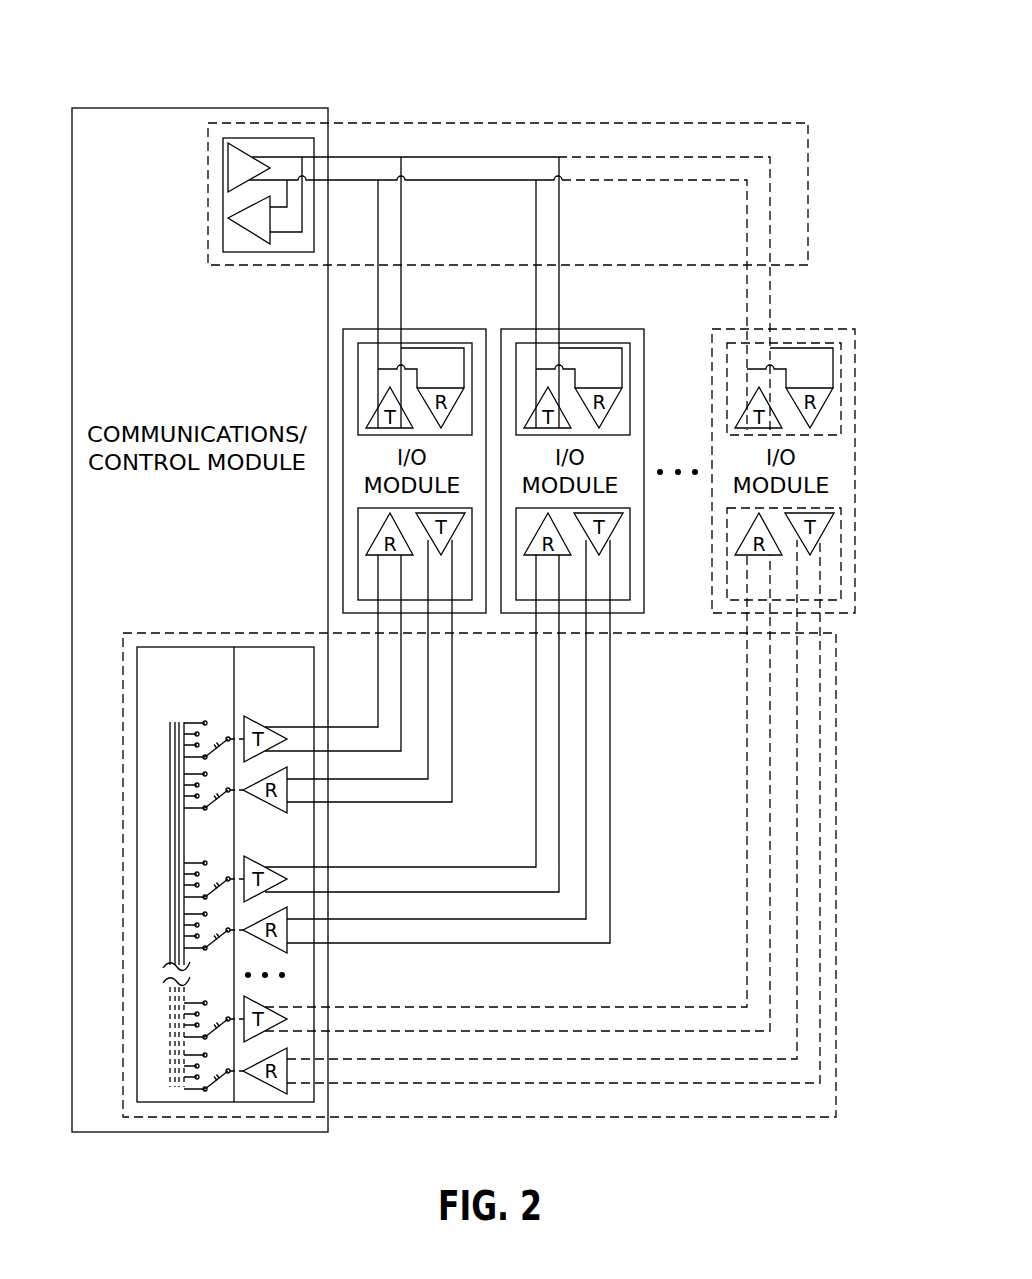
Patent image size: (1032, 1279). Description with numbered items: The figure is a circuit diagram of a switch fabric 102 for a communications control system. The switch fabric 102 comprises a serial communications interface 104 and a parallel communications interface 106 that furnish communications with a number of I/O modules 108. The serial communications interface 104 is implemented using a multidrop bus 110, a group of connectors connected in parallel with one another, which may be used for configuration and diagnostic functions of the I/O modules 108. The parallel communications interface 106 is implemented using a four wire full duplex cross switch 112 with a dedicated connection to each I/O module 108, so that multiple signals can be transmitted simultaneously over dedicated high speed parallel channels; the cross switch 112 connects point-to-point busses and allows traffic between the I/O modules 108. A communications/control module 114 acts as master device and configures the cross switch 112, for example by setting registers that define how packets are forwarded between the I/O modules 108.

The switch fabric 102 is at (748, 42).
The serial communications interface 104 is at (535, 249).
The parallel communications interface 106 is at (479, 855).
The I/O module 108 is at (412, 327).
The multidrop bus 110 is at (465, 157).
The cross switch 112 is at (183, 1102).
The communications/control module 114 is at (222, 108).